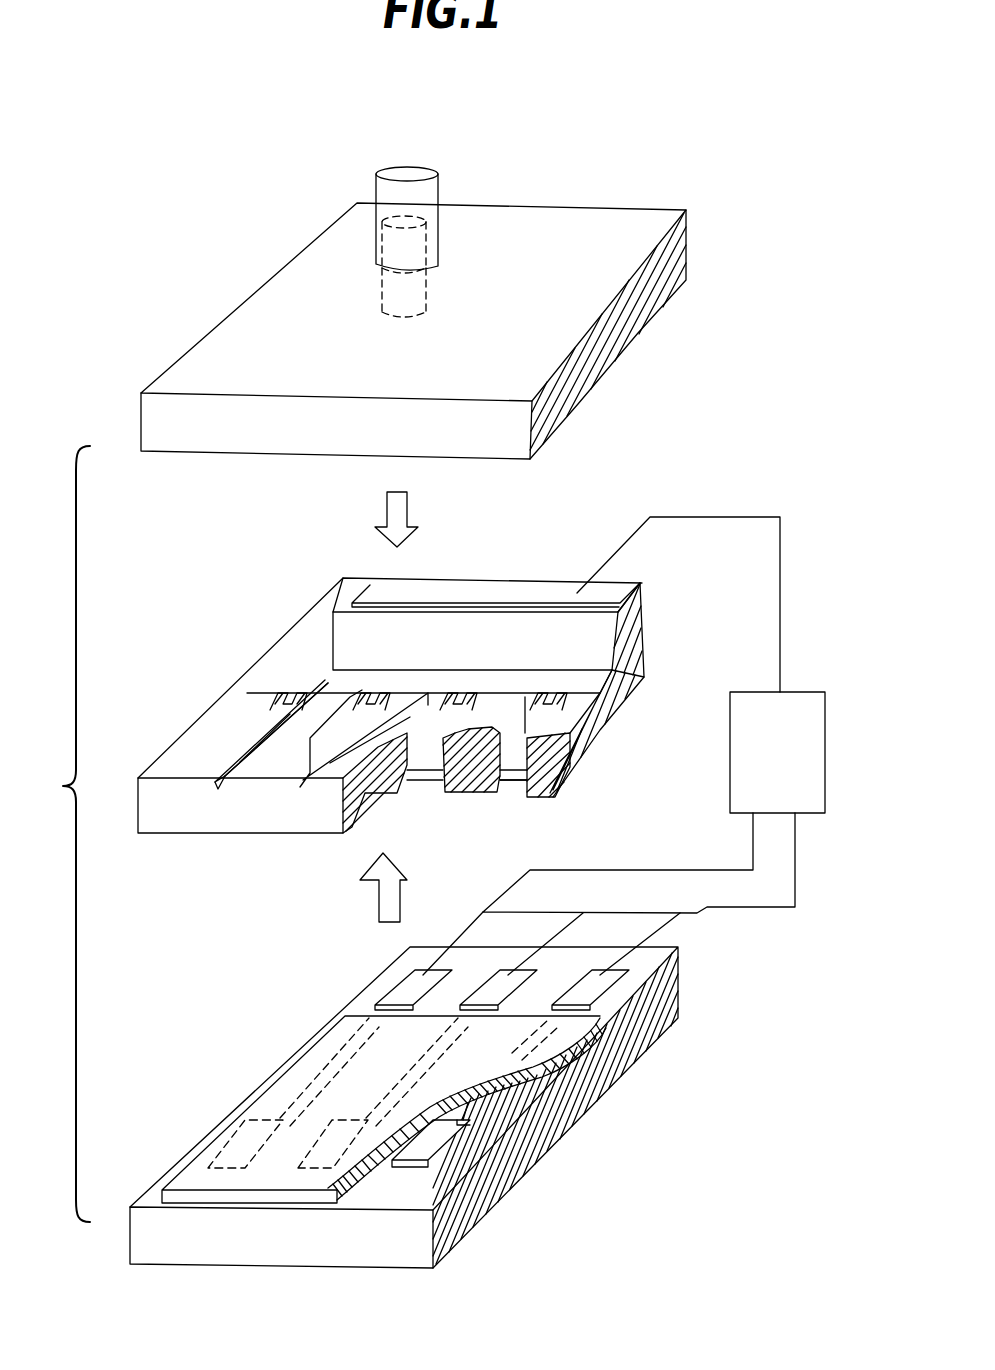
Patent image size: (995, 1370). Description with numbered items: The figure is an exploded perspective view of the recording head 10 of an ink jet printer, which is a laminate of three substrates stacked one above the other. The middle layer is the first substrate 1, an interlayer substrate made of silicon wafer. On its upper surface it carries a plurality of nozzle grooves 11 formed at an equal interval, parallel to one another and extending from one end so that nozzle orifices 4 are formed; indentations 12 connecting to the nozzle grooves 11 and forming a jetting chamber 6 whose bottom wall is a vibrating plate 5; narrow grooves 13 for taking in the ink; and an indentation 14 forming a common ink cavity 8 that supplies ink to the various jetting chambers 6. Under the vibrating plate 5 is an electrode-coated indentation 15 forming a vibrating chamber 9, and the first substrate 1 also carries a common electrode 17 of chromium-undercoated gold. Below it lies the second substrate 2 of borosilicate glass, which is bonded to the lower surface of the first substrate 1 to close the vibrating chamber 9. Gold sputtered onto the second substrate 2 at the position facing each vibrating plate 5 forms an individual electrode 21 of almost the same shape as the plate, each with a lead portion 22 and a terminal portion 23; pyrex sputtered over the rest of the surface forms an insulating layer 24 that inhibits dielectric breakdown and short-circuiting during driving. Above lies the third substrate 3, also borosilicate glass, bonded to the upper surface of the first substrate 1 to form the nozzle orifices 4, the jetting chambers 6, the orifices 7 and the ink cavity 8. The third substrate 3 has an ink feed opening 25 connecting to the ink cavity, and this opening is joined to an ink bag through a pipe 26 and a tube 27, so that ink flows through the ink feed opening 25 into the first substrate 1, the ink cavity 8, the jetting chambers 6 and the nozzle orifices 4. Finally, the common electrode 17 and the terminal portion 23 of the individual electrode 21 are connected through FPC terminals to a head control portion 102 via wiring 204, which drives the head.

The first substrate 1 is at (633, 653).
The second substrate 2 is at (678, 992).
The third substrate 3 is at (627, 229).
The nozzle orifices 4 is at (216, 785).
The vibrating plate 5 is at (417, 780).
The jetting chamber 6 is at (253, 739).
The orifices 7 is at (300, 687).
The common ink cavity 8 is at (436, 650).
The vibrating chamber 9 is at (520, 786).
The recording head 10 is at (52, 804).
The nozzle grooves 11 is at (217, 780).
The indentations 12 is at (235, 748).
The narrow grooves 13 is at (262, 733).
The indentation 14 is at (538, 632).
The indentation 15 is at (497, 783).
The common electrode 17 is at (498, 597).
The individual electrode 21 is at (430, 1143).
The lead portion 22 is at (487, 1100).
The terminal portion 23 is at (613, 997).
The insulating layer 24 is at (572, 1067).
The ink feed opening 25 is at (426, 290).
The pipe 26 is at (428, 217).
The tube 27 is at (428, 171).
The head control portion 102 is at (798, 708).
The wiring 204 is at (723, 908).